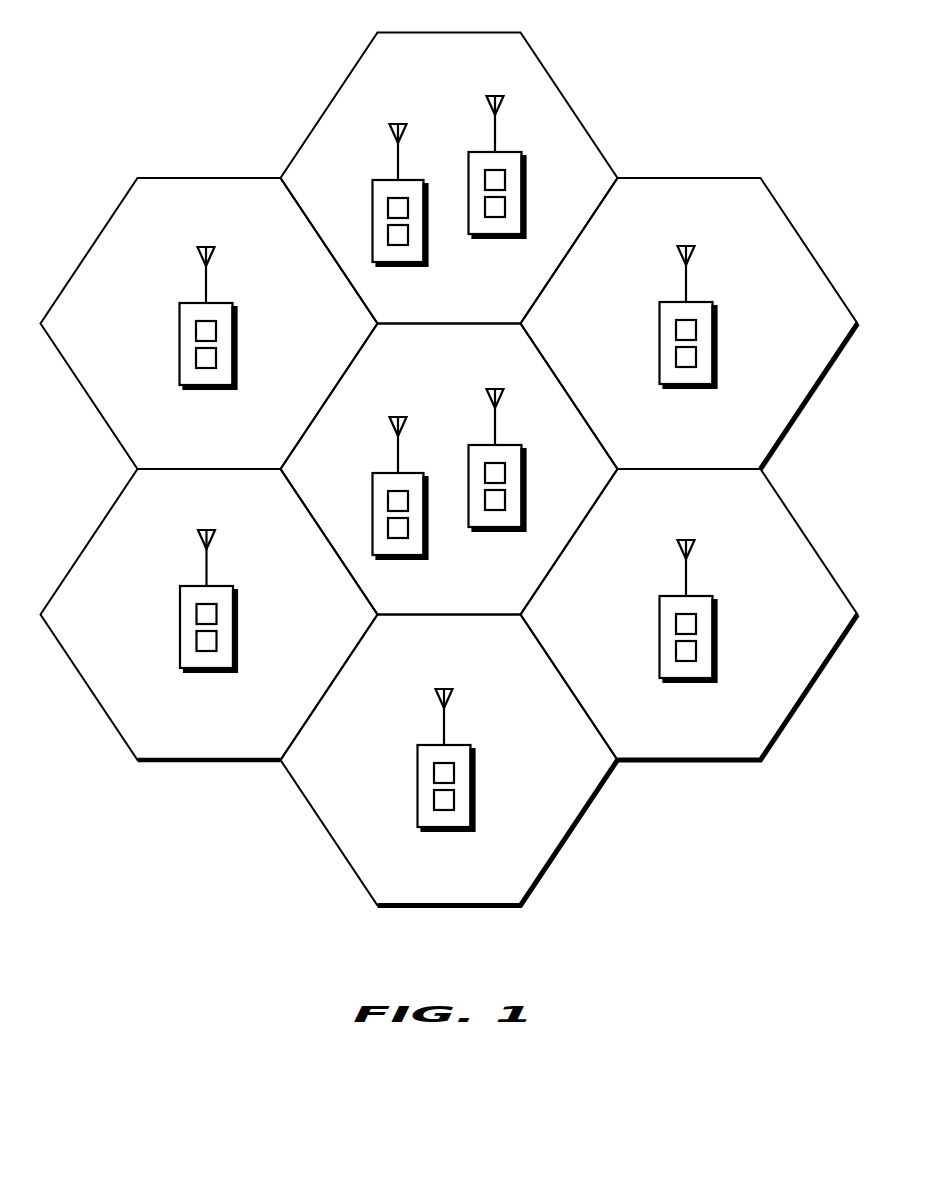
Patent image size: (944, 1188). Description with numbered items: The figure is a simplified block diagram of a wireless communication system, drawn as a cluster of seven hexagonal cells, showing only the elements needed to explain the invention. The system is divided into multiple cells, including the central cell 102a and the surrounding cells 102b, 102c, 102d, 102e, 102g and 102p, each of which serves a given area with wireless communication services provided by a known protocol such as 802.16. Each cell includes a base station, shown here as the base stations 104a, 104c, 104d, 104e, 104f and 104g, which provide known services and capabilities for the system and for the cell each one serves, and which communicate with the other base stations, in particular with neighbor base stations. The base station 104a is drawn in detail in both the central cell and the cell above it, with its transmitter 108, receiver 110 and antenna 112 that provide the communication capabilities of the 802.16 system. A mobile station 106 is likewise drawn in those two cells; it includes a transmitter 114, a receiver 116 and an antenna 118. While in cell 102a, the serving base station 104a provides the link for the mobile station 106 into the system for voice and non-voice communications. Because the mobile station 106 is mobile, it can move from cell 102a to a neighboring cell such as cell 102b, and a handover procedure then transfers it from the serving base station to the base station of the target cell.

The cell 102a is at (449, 469).
The cell 102b is at (449, 178).
The cell 102c is at (689, 323).
The cell 102d is at (689, 614).
The cell 102e is at (449, 760).
The cell 102g is at (209, 323).
The cell 102p is at (209, 614).
The base station 104a is at (498, 152).
The base station 104c is at (689, 302).
The base station 104d is at (689, 596).
The base station 104e is at (447, 745).
The base station 104f is at (210, 586).
The base station 104g is at (211, 303).
The mobile station 106 is at (385, 180).
The transmitter 108 is at (492, 183).
The receiver 110 is at (495, 212).
The antenna 112 is at (489, 96).
The transmitter 114 is at (392, 209).
The receiver 116 is at (397, 242).
The antenna 118 is at (396, 125).